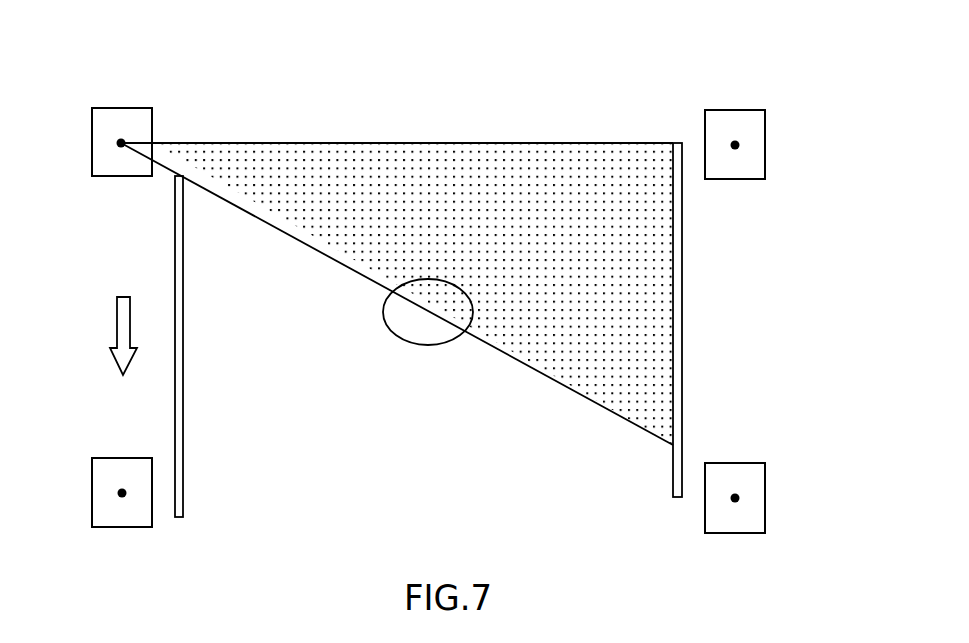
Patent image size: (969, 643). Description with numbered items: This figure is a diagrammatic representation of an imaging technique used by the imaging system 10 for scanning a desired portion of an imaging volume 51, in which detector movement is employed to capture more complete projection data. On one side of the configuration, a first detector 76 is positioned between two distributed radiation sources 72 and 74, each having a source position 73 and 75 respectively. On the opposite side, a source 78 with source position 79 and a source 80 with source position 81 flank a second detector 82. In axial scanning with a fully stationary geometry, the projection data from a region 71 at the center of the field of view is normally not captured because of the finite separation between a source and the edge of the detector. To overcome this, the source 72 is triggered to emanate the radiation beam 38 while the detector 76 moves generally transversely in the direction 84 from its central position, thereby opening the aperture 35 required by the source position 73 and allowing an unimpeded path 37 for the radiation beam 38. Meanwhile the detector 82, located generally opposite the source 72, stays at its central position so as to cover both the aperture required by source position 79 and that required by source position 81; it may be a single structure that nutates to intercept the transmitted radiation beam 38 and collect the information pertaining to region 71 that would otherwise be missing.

The imaging system 10 is at (156, 43).
The aperture 35 is at (149, 141).
The unimpeded path 37 is at (168, 162).
The radiation beam 38 is at (604, 396).
The imaging volume 51 is at (443, 431).
The region at the center of the field of view 71 is at (398, 318).
The distributed radiation source 72 is at (92, 141).
The source position 73 is at (120, 147).
The distributed radiation source 74 is at (92, 490).
The source position 75 is at (121, 499).
The detector 76 is at (183, 270).
The source 78 is at (765, 142).
The source position 79 is at (736, 139).
The source 80 is at (765, 496).
The source position 81 is at (735, 503).
The detector 82 is at (682, 202).
The direction 84 is at (118, 320).